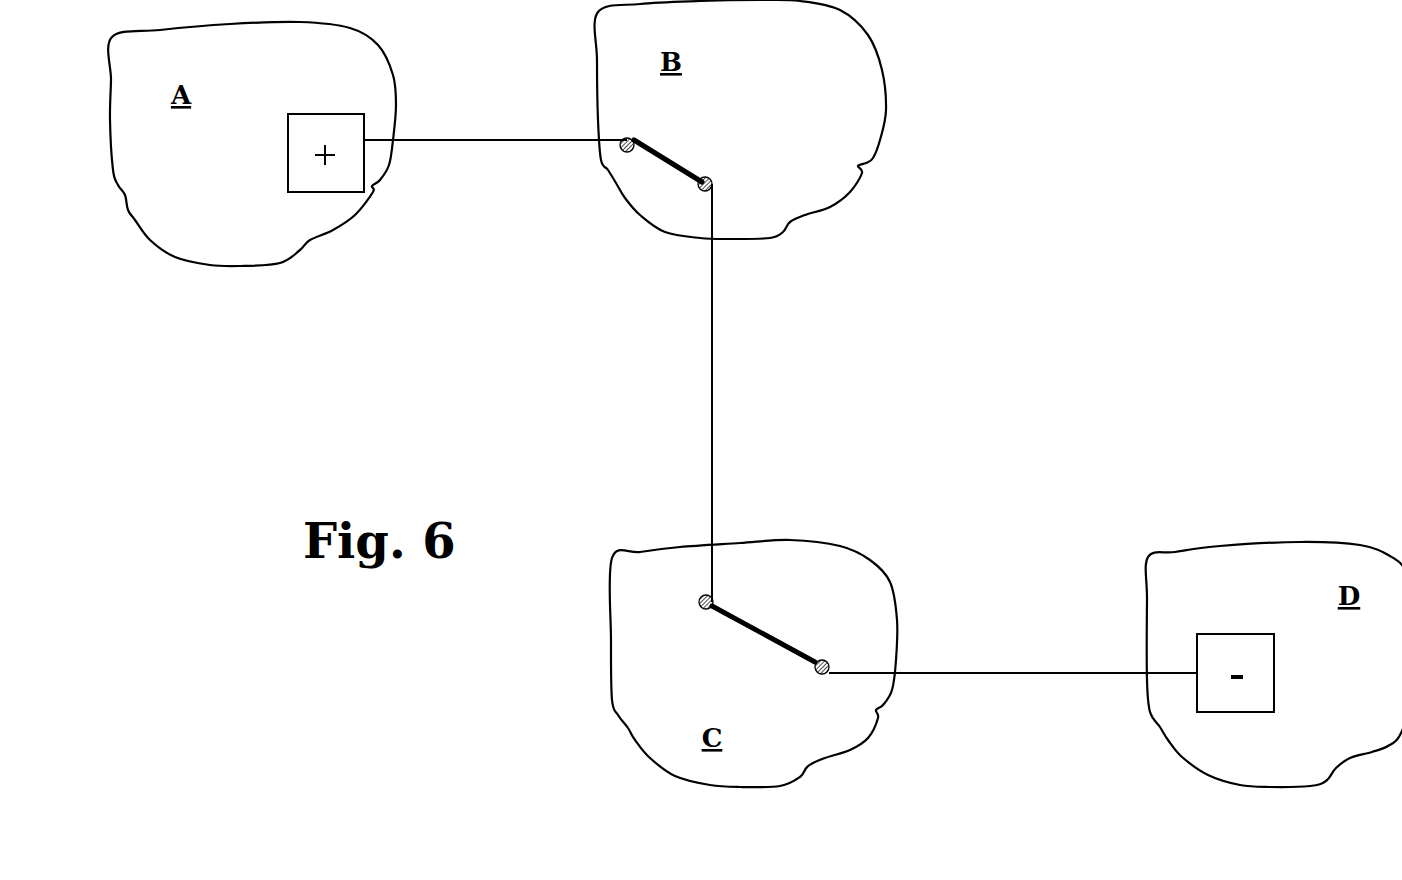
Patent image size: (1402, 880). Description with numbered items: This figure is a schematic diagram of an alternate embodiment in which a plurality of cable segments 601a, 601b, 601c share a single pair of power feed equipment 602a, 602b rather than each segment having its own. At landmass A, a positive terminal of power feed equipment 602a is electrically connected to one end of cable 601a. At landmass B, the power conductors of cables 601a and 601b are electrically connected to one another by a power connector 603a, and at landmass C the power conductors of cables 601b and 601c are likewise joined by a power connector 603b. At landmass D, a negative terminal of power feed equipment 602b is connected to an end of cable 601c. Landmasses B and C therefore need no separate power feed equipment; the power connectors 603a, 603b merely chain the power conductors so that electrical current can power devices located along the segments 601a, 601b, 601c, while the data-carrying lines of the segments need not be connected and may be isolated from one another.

The segment 601a is at (480, 143).
The segment 601b is at (714, 357).
The segment 601c is at (943, 664).
The power feed equipment 602a is at (323, 200).
The power feed equipment 602b is at (1241, 625).
The power connector 603a is at (672, 155).
The power connector 603b is at (780, 622).